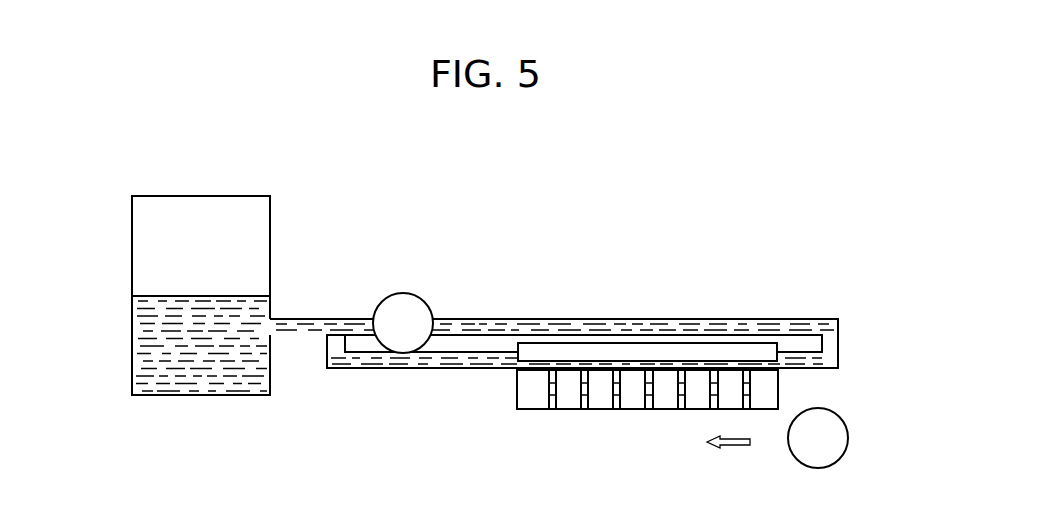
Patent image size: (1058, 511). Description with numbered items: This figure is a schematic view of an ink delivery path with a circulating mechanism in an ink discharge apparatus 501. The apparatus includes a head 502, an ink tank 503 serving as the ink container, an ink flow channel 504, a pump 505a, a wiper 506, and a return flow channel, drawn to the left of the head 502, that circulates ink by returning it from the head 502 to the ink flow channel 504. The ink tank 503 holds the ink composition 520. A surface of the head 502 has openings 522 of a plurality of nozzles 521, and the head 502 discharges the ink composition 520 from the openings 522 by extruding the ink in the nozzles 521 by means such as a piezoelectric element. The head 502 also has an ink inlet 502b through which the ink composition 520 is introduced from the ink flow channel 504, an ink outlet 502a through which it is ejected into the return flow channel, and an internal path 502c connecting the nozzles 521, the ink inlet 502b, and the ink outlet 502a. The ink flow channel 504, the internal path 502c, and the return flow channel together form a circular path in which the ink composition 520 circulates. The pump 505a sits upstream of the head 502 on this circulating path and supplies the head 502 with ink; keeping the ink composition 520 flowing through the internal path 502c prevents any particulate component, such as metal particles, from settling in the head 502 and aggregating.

The ink discharge apparatus 501 is at (664, 243).
The head 502 is at (525, 395).
The ink outlet 502a is at (518, 362).
The ink inlet 502b is at (781, 367).
The internal path 502c is at (617, 366).
The ink tank 503 is at (242, 202).
The ink flow channel 504 is at (822, 326).
The pump 505a is at (402, 293).
The wiper 506 is at (842, 445).
The ink composition 520 is at (143, 344).
The nozzles 521 is at (742, 385).
The openings 522 is at (548, 409).